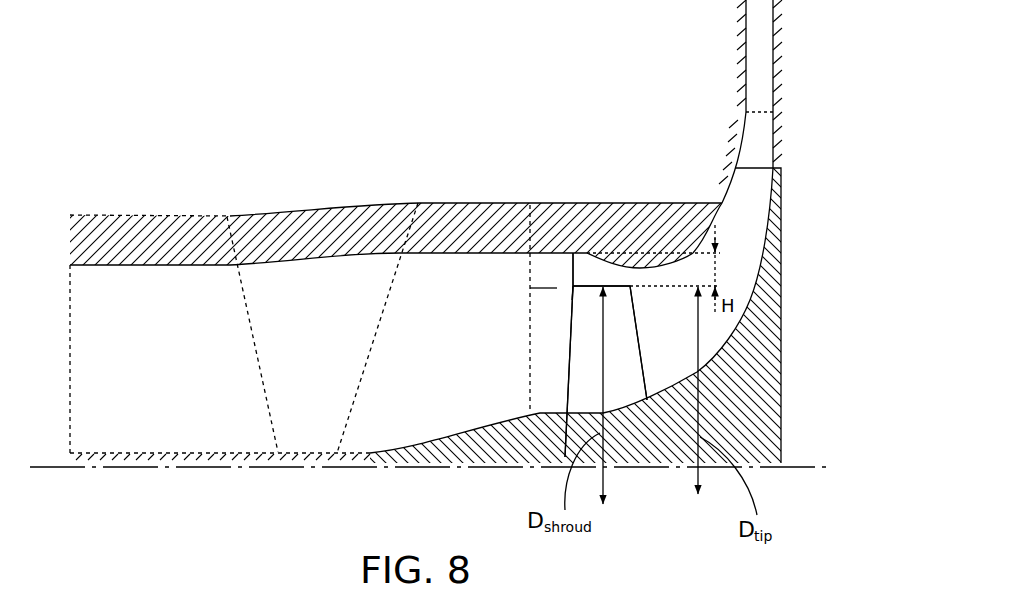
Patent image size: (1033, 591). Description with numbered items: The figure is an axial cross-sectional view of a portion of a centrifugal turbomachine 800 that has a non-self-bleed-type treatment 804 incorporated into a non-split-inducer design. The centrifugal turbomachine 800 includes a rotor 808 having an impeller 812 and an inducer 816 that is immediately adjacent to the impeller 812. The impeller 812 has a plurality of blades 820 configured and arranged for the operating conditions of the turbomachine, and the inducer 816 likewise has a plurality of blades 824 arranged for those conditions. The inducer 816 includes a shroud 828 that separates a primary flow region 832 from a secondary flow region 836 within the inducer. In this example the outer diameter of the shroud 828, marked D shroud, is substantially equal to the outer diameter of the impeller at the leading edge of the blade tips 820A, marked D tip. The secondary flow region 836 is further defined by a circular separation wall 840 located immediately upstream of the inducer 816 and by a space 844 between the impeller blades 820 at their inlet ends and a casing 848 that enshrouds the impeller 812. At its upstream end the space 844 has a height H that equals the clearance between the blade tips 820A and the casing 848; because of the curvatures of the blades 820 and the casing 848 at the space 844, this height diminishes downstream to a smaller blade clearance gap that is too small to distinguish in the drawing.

The centrifugal turbomachine 800 is at (487, 108).
The non-self-bleed-type treatment 804 is at (552, 263).
The rotor 808 is at (445, 437).
The impeller 812 is at (700, 233).
The inducer 816 is at (600, 245).
The impeller blades 820 is at (668, 370).
The blade tips 820A is at (628, 280).
The inducer blades 824 is at (586, 278).
The shroud 828 is at (588, 290).
The primary flow region 832 is at (560, 372).
The secondary flow region 836 is at (562, 282).
The circular separation wall 840 is at (558, 287).
The space 844 is at (643, 262).
The casing 848 is at (318, 228).